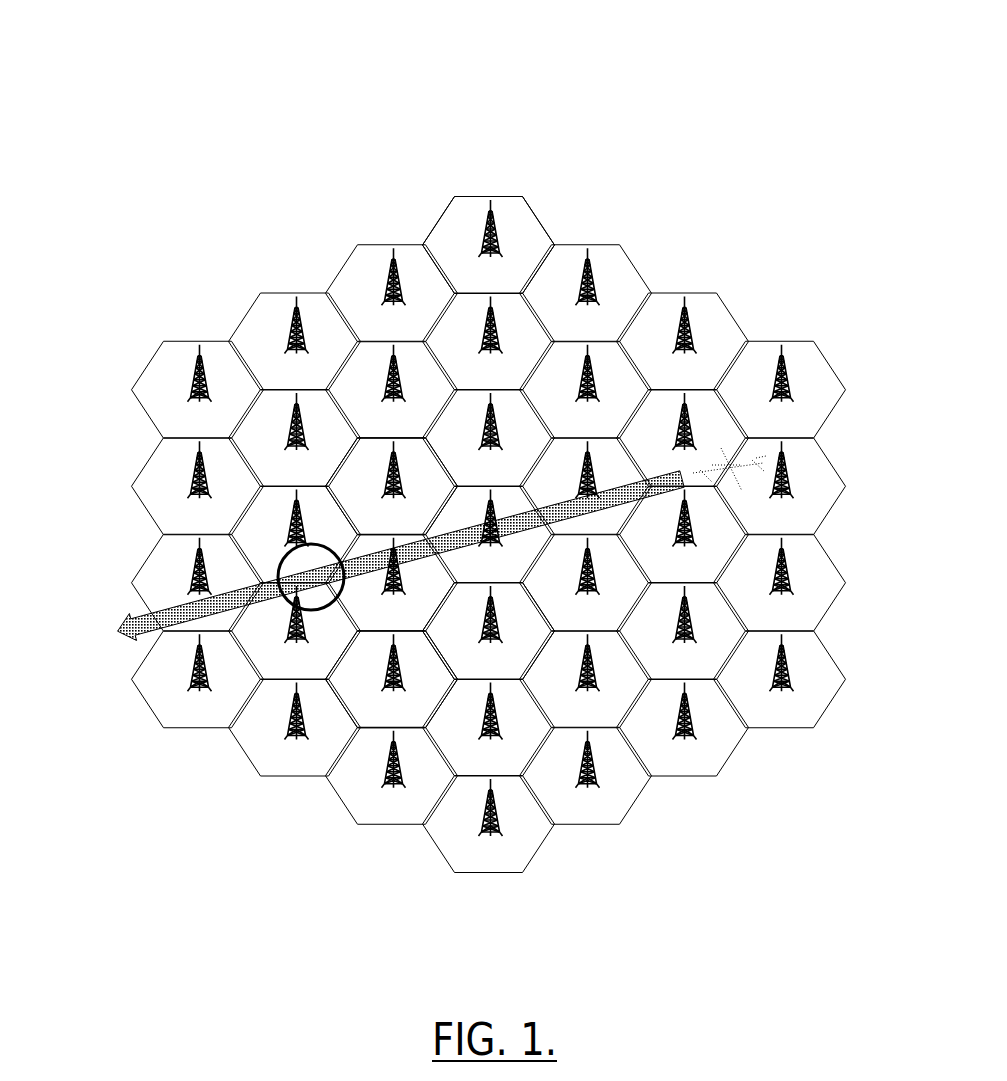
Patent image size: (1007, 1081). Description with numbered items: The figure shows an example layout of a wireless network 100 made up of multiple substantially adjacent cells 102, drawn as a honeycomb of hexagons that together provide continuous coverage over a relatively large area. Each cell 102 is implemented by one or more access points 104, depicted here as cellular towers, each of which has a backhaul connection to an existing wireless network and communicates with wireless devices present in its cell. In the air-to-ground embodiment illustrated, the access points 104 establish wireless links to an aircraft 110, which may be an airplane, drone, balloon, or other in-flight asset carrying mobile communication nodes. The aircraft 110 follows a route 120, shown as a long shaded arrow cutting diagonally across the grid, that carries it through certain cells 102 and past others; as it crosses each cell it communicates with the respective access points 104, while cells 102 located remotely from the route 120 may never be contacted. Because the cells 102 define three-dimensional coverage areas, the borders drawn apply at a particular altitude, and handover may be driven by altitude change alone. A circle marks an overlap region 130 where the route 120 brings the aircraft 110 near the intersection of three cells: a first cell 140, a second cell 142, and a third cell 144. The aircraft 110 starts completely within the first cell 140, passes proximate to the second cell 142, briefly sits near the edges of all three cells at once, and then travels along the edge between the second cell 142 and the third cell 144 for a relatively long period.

The wireless network 100 is at (735, 64).
The cell 102 is at (488, 194).
The access point 104 is at (498, 232).
The aircraft 110 is at (727, 468).
The route 120 is at (168, 609).
The overlap region 130 is at (285, 560).
The first cell 140 is at (430, 623).
The second cell 142 is at (343, 514).
The third cell 144 is at (332, 673).